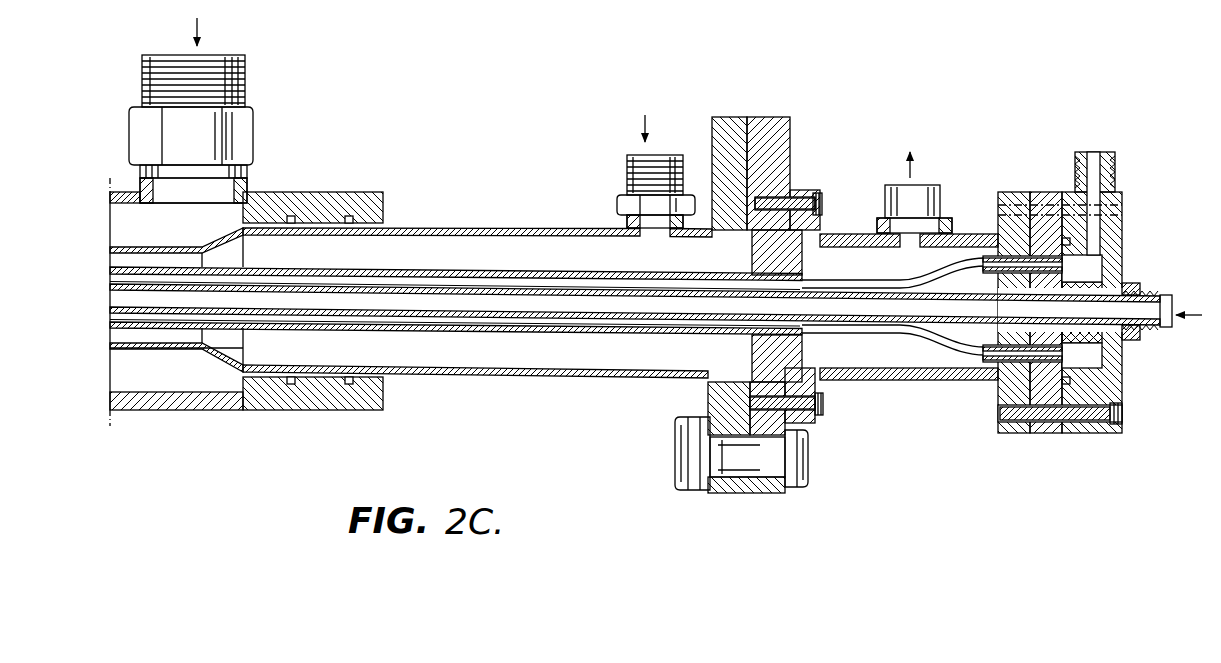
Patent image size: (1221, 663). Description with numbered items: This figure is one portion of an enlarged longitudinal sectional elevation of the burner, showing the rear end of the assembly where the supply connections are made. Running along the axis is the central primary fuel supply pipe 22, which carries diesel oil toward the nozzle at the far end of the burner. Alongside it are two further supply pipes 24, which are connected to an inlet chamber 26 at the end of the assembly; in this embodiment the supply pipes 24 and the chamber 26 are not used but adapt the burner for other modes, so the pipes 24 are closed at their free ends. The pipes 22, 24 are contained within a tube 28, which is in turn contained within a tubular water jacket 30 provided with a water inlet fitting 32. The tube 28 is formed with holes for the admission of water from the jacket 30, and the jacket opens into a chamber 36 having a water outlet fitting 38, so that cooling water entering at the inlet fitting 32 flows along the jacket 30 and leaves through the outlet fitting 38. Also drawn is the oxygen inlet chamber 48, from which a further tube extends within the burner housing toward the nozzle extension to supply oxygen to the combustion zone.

The central primary fuel supply pipe 22 is at (858, 304).
The further supply pipes 24 is at (838, 288).
The inlet chamber 26 is at (1127, 190).
The tube 28 is at (543, 272).
The tubular water jacket 30 is at (440, 228).
The water inlet fitting 32 is at (663, 177).
The chamber 36 is at (966, 216).
The water outlet fitting 38 is at (922, 200).
The oxygen inlet chamber 48 is at (340, 180).